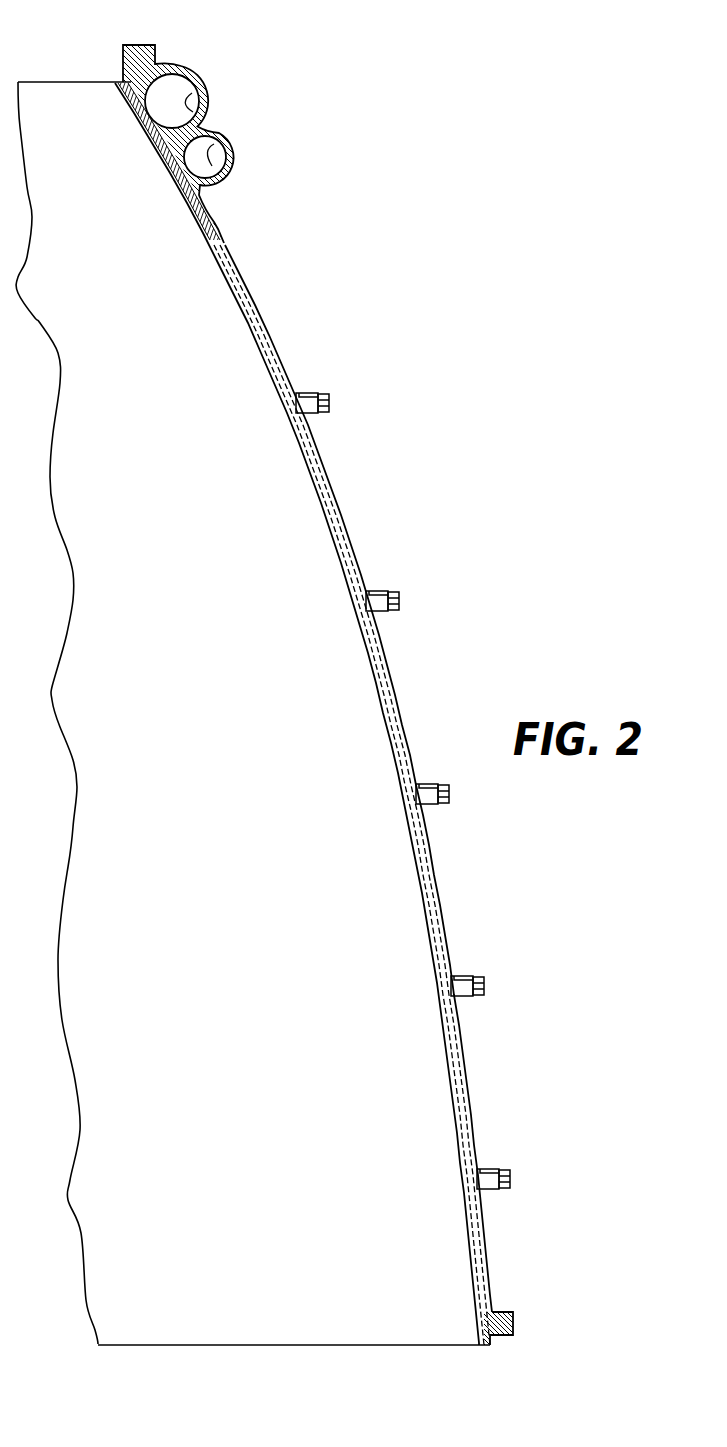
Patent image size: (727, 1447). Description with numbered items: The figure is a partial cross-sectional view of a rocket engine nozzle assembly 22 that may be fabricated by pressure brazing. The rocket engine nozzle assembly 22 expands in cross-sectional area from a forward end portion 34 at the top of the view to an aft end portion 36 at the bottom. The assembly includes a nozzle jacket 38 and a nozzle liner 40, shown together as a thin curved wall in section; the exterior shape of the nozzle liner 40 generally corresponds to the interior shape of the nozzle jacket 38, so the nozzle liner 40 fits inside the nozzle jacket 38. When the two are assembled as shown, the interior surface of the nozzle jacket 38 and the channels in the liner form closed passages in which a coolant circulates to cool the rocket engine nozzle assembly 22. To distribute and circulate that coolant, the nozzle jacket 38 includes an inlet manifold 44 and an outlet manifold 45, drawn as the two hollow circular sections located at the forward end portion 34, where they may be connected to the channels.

The rocket engine nozzle assembly 22 is at (447, 272).
The forward end portion 34 is at (190, 47).
The aft end portion 36 is at (558, 1317).
The nozzle jacket 38 is at (323, 466).
The nozzle liner 40 is at (314, 487).
The inlet manifold 44 is at (200, 80).
The outlet manifold 45 is at (225, 138).